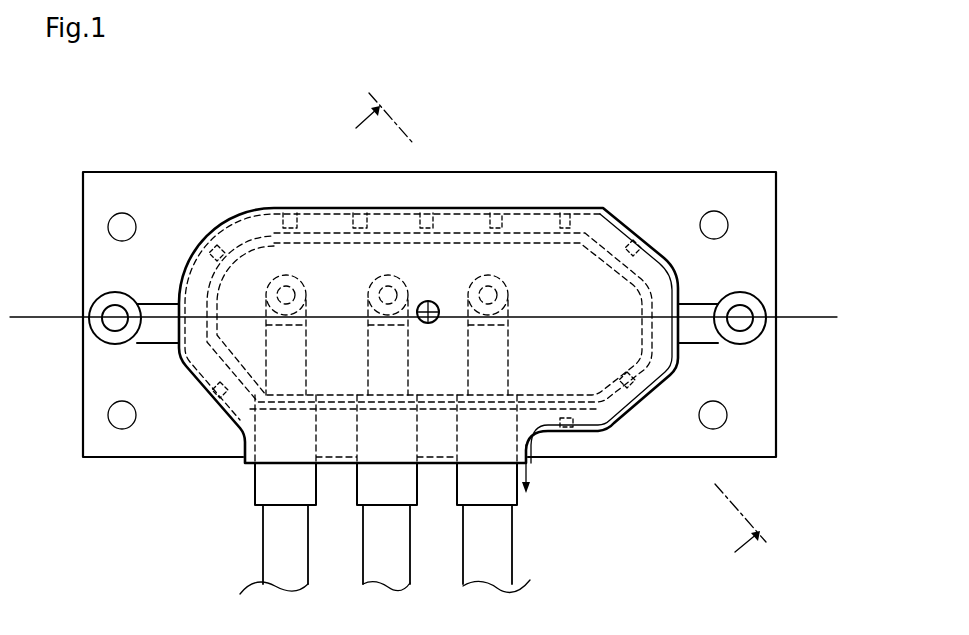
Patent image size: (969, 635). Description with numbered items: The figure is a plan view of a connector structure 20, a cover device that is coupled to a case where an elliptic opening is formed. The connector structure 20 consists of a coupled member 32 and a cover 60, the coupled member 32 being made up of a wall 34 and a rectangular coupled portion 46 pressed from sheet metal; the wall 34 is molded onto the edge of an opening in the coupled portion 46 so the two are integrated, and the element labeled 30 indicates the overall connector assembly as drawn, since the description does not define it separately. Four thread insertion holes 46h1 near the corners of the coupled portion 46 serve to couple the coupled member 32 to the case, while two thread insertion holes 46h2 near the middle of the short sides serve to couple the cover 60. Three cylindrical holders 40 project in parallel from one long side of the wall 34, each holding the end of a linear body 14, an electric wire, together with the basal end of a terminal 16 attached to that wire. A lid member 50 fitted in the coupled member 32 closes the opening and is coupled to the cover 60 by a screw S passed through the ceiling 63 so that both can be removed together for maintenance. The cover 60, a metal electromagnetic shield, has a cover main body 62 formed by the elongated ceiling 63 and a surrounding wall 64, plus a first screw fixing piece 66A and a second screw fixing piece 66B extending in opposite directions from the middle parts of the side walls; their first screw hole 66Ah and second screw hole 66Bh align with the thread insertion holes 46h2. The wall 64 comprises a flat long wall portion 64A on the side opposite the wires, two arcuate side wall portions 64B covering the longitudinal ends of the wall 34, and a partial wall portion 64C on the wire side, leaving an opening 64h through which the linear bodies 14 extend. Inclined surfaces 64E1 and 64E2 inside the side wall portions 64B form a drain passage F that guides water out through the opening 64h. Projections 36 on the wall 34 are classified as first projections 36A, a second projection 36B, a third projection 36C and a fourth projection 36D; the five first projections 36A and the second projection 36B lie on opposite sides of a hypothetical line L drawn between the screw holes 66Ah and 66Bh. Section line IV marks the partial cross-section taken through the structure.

The linear body 14 is at (308, 563).
The terminal 16 is at (362, 294).
The connector structure 20 is at (644, 166).
The connector 30 is at (441, 166).
The coupled member 32 is at (607, 62).
The wall 34 is at (533, 216).
The projections 36 is at (435, 321).
The first projection 36A is at (382, 206).
The second projection 36B is at (582, 432).
The third projection 36C is at (668, 258).
The fourth projection 36D is at (217, 410).
The holder 40 is at (317, 482).
The coupled portion 46 is at (587, 172).
The thread insertion hole 46h1 is at (130, 222).
The thread insertion hole 46h2 is at (468, 231).
The lid member 50 is at (645, 215).
The cover 60 is at (213, 218).
The cover main body 62 is at (462, 262).
The ceiling 63 is at (455, 207).
The wall 64 is at (652, 244).
The long wall portion 64A is at (498, 207).
The side wall portion 64B is at (681, 294).
The partial wall portion 64C is at (600, 432).
The inclined surface 64E1 is at (663, 387).
The inclined surface 64E2 is at (242, 455).
The opening 64h is at (288, 466).
The first screw fixing piece 66A is at (752, 343).
The second screw fixing piece 66B is at (97, 342).
The first screw hole 66Ah is at (748, 310).
The second screw hole 66Bh is at (108, 310).
The screw S is at (429, 301).
The hypothetical line L is at (818, 318).
The drain passage F is at (543, 428).
The section line IV- IV is at (549, 333).